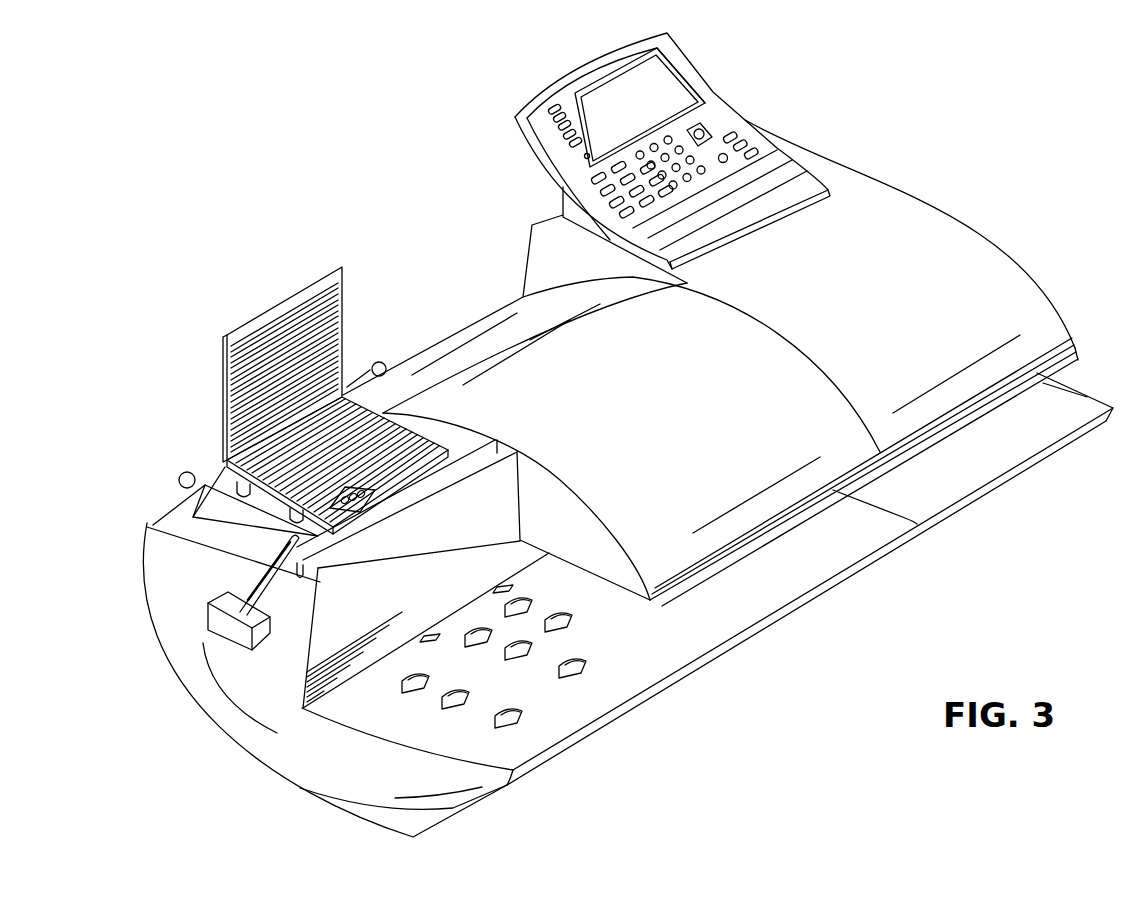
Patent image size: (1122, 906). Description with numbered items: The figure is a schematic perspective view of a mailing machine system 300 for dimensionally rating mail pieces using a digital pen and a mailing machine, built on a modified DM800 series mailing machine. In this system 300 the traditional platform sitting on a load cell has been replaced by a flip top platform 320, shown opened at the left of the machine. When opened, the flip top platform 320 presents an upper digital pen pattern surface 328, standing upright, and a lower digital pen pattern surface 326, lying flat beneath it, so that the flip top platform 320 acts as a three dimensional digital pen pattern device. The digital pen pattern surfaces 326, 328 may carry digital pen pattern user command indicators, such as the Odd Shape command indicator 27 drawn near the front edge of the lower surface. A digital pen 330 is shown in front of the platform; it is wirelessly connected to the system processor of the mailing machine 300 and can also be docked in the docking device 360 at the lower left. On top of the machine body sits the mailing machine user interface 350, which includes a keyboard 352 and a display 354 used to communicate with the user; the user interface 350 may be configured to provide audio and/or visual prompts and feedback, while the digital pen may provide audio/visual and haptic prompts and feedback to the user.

The mailing machine system 300 is at (1002, 147).
The flip top platform 320 is at (185, 345).
The lower digital pen pattern surface 326 is at (317, 537).
The upper digital pen pattern surface 328 is at (278, 325).
The digital pen 330 is at (250, 580).
The docking device 360 is at (207, 613).
The user interface 350 is at (698, 80).
The keyboard 352 is at (600, 198).
The display 354 is at (622, 80).
The Odd Shape command indicator 27 is at (373, 503).